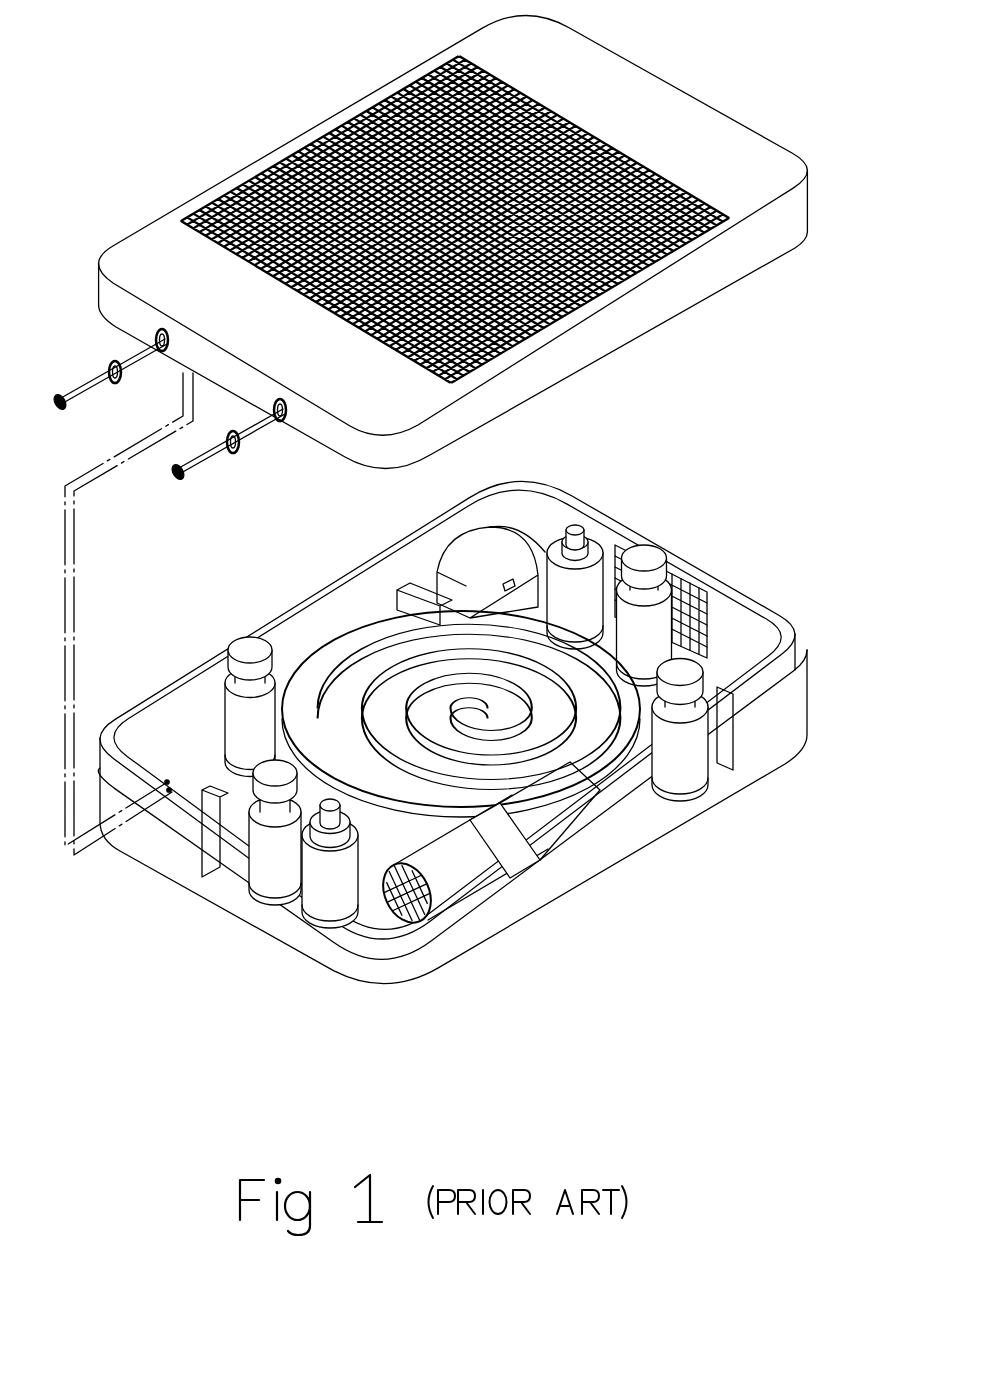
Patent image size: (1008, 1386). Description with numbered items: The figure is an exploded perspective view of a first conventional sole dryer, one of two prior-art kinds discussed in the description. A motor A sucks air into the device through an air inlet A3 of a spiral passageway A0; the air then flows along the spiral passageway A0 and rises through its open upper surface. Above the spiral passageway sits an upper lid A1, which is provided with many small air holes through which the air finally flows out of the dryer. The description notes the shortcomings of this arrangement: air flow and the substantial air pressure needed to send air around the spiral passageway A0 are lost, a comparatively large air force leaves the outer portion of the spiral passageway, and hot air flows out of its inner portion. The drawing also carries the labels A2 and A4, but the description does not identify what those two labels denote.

The upper lid A1 is at (760, 181).
The ventilation mesh grid A2 is at (652, 246).
The motor A is at (503, 556).
The spiral heating element A4 is at (533, 700).
The spiral passageway A0 is at (690, 588).
The air inlet A3 is at (417, 920).